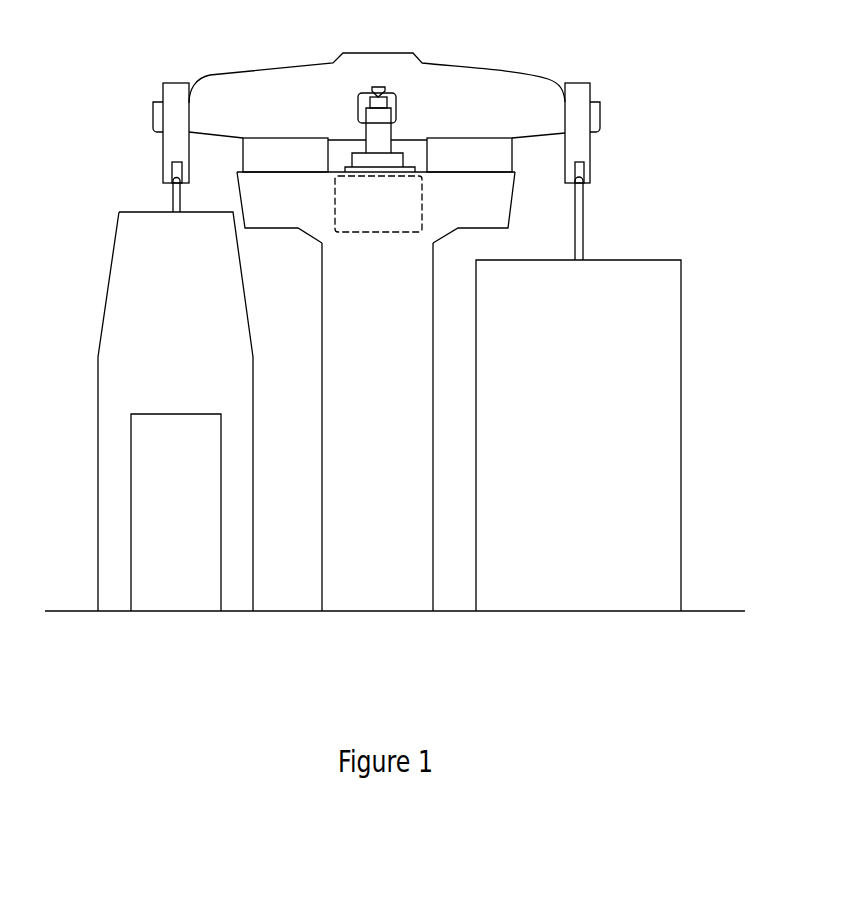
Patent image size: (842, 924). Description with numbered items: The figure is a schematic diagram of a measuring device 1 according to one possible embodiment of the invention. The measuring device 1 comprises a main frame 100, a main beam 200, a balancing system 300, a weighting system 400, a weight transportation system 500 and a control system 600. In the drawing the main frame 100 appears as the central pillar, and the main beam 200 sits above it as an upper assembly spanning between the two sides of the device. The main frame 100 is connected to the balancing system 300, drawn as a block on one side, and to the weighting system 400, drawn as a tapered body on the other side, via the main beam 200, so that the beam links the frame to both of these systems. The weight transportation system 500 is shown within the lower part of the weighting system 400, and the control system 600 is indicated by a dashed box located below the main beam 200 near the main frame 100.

The measuring device 1 is at (153, 112).
The main frame 100 is at (375, 372).
The main beam 200 is at (438, 97).
The balancing system 300 is at (630, 298).
The weighting system 400 is at (140, 290).
The weight transportation system 500 is at (205, 445).
The control system 600 is at (348, 200).